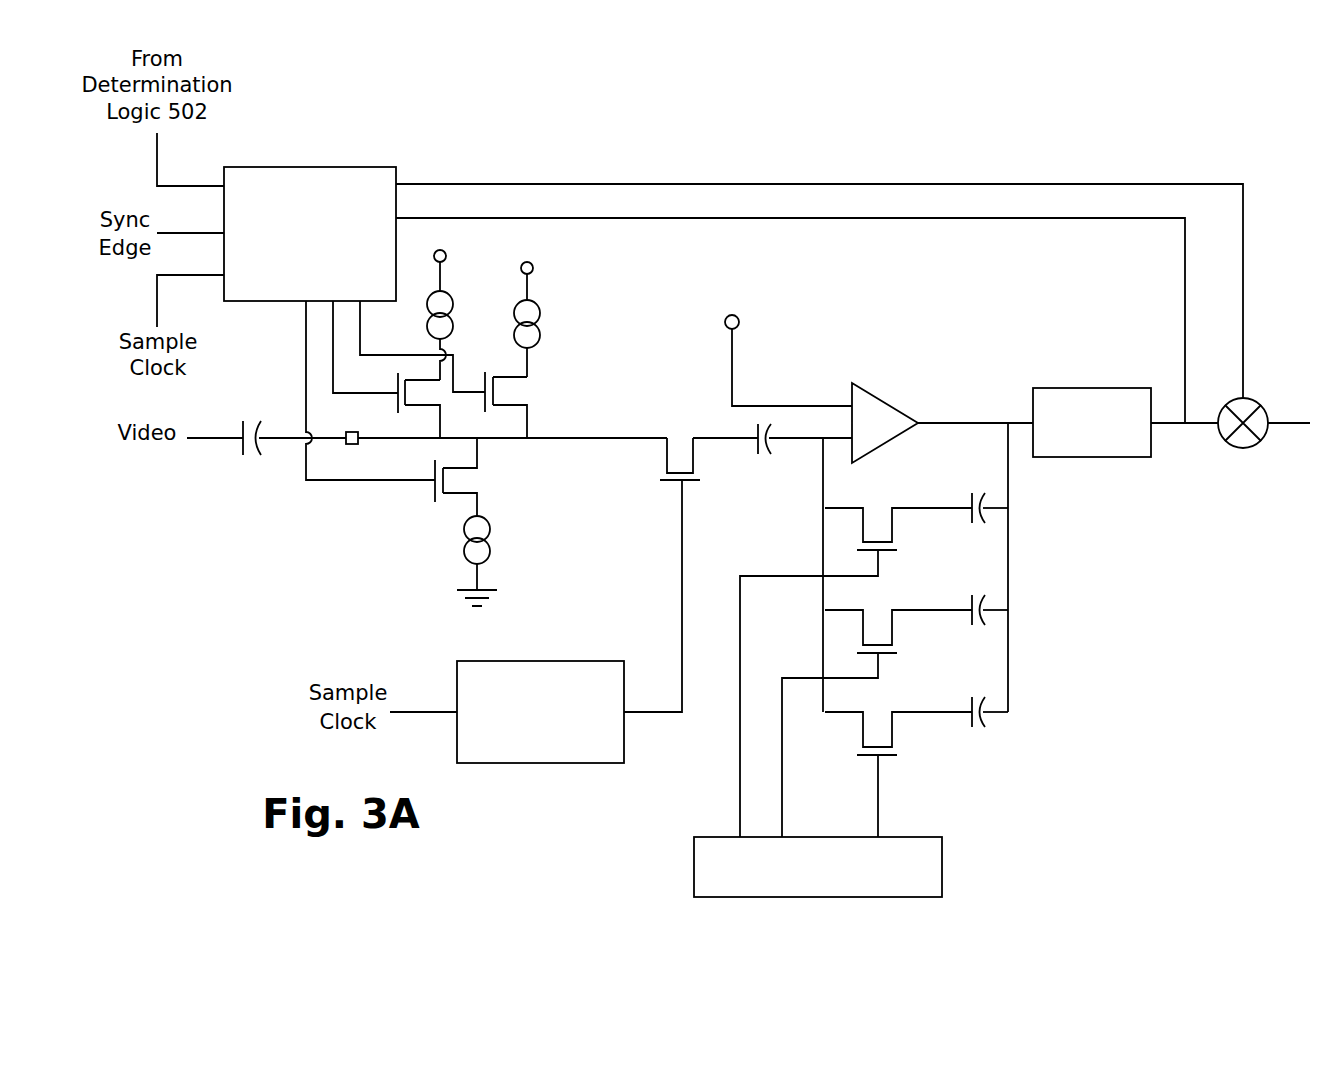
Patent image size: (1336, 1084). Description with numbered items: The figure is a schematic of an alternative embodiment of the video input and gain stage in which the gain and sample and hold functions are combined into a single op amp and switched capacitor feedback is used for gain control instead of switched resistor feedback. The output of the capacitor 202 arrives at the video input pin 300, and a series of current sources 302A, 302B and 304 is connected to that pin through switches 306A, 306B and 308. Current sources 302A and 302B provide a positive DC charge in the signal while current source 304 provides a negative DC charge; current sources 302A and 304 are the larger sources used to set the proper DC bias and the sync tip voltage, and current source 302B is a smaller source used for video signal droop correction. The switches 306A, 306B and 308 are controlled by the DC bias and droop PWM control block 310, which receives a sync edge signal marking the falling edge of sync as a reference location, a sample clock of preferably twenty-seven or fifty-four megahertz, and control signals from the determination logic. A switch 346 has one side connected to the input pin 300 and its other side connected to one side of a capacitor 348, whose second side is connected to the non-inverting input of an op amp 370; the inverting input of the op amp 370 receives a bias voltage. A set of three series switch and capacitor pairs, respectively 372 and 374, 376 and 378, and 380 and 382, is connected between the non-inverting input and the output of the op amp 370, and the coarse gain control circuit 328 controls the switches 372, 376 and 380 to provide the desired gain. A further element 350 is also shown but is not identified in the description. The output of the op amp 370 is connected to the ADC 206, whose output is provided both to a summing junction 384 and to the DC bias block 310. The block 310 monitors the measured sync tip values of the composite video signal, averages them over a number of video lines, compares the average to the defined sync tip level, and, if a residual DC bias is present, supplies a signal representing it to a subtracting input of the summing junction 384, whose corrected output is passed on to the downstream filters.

The capacitor 202 is at (243, 453).
The ADC 206 is at (1057, 388).
The video input pin 300 is at (352, 444).
The current source 302A is at (452, 296).
The current source 302B is at (513, 307).
The current source 304 is at (463, 528).
The switch 306A is at (397, 409).
The switch 306B is at (516, 378).
The switch 308 is at (433, 493).
The DC bias and droop PWM control block 310 is at (317, 167).
The coarse gain control circuit 328 is at (843, 897).
The switch 346 is at (697, 458).
The capacitor 348 is at (770, 453).
The sample and hold control 350 is at (540, 661).
The op amp 370 is at (887, 398).
The switch 372 is at (892, 523).
The capacitor 374 is at (967, 498).
The switch 376 is at (892, 625).
The capacitor 378 is at (972, 605).
The switch 380 is at (892, 732).
The capacitor 382 is at (982, 725).
The summing junction 384 is at (1253, 448).